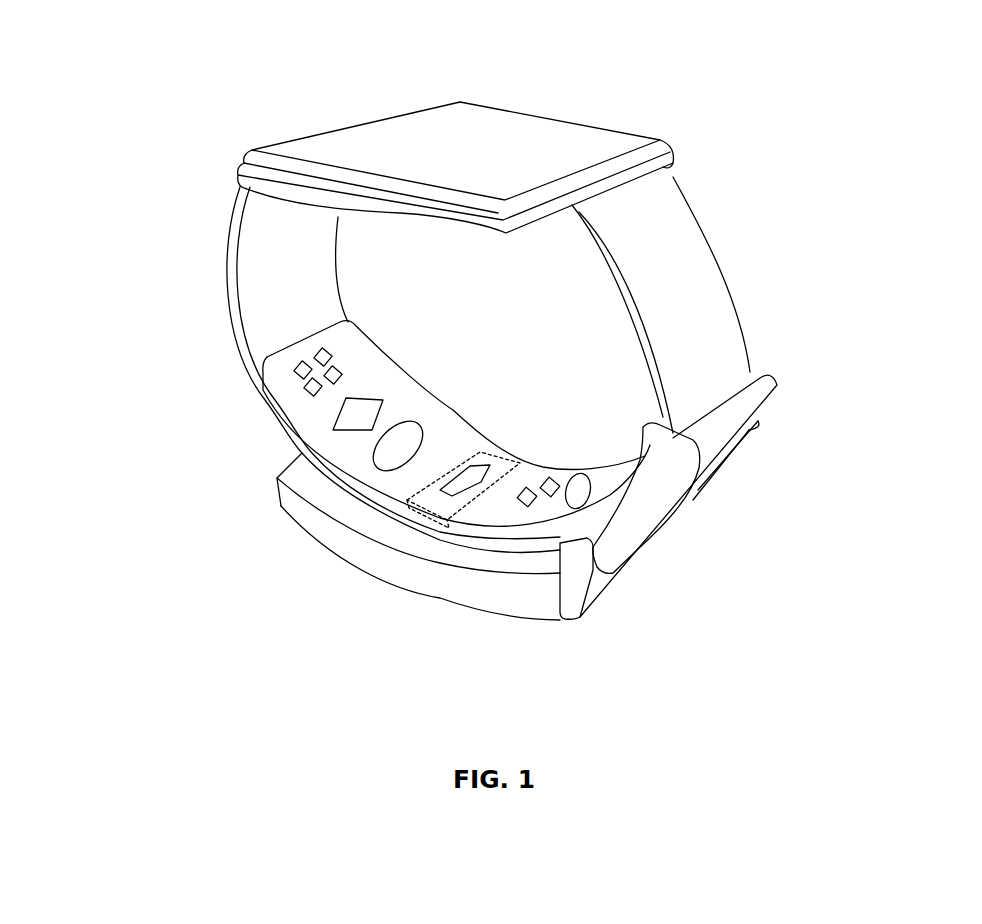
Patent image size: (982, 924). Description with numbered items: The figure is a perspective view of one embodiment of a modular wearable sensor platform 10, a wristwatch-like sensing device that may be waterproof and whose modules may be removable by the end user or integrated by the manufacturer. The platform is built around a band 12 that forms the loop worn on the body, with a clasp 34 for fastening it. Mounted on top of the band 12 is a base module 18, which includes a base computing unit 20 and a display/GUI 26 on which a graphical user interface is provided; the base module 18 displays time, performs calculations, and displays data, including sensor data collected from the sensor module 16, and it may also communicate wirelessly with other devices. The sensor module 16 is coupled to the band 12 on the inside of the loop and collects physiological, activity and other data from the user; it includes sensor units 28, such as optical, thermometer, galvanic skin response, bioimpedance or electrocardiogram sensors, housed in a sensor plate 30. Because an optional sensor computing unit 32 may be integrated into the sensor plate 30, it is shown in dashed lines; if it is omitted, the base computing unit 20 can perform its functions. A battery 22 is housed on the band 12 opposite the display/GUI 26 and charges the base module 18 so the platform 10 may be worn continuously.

The modular wearable sensor platform 10 is at (461, 344).
The band 12 is at (729, 242).
The sensor module 16 is at (345, 456).
The base module 18 is at (470, 176).
The base computing unit 20 is at (365, 209).
The battery 22 is at (283, 508).
The display/GUI 26 is at (355, 150).
The sensor units 28 is at (413, 420).
The sensor plate 30 is at (263, 357).
The sensor computing unit 32 is at (447, 507).
The clasp 34 is at (714, 510).